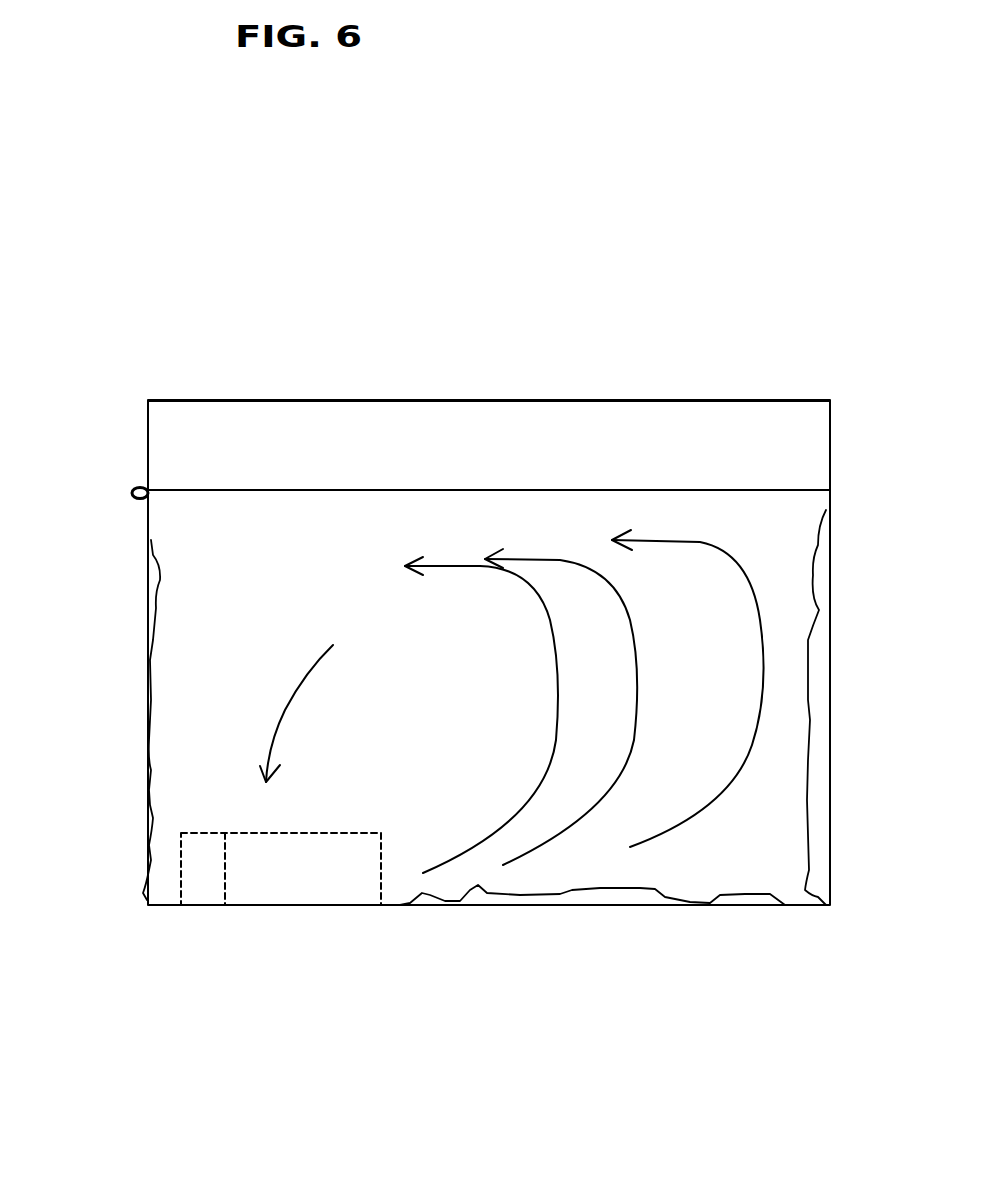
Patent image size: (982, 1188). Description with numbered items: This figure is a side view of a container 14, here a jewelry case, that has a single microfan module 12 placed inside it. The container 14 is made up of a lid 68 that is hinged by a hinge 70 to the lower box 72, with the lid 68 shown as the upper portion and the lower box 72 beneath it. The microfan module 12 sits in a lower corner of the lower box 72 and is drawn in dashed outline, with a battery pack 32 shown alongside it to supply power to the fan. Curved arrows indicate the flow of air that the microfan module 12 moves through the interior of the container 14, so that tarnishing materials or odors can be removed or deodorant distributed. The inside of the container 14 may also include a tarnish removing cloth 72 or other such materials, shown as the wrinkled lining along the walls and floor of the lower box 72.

The microfan module 12 is at (264, 790).
The container 14 is at (709, 375).
The battery pack 32 is at (207, 886).
The lid 68 is at (305, 400).
The hinge 70 is at (132, 496).
The lower box 72 is at (157, 615).